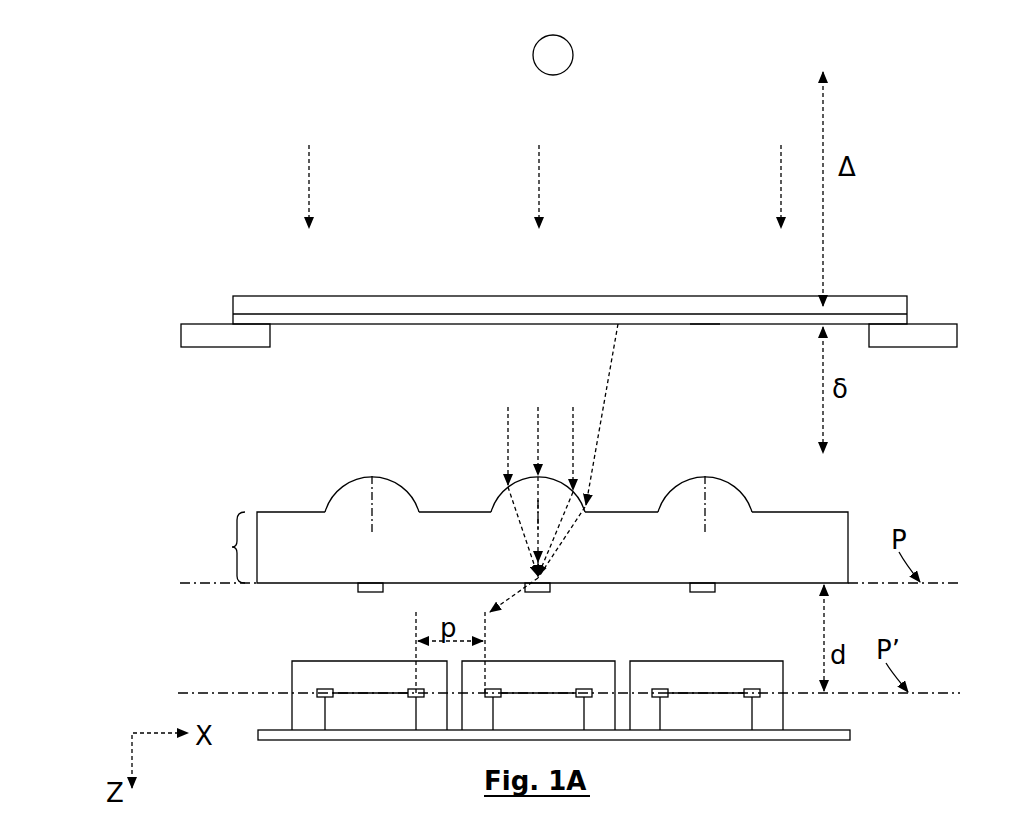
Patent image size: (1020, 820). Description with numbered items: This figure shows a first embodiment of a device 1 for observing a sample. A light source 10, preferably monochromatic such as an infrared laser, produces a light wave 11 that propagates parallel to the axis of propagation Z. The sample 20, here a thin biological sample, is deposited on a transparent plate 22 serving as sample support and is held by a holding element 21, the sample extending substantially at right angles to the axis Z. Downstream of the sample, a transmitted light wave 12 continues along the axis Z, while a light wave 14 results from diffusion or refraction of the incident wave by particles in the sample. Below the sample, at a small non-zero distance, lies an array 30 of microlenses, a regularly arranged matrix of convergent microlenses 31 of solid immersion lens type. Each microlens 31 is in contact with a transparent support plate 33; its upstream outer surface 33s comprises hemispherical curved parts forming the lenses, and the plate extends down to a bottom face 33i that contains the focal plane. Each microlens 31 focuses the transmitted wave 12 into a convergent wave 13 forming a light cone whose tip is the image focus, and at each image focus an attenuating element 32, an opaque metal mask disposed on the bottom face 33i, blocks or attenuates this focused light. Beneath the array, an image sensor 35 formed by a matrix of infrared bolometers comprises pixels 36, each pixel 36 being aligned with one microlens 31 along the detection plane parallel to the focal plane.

The device 1 is at (112, 116).
The light source 10 is at (548, 46).
The light wave 11 is at (531, 183).
The transmitted light wave 12 is at (503, 445).
The convergent wave 13 is at (503, 523).
The diffused or refracted light wave 14 is at (597, 396).
The sample 20 is at (432, 304).
The holding element 21 is at (207, 331).
The transparent plate 22 is at (705, 327).
The array of microlenses 30 is at (267, 483).
The convergent microlens 31 is at (374, 474).
The attenuating element 32 is at (369, 581).
The transparent support plate 33 is at (231, 547).
The upstream outer surface 33s is at (329, 498).
The bottom face 33i is at (741, 589).
The image sensor 35 is at (265, 691).
The pixel 36 is at (346, 668).